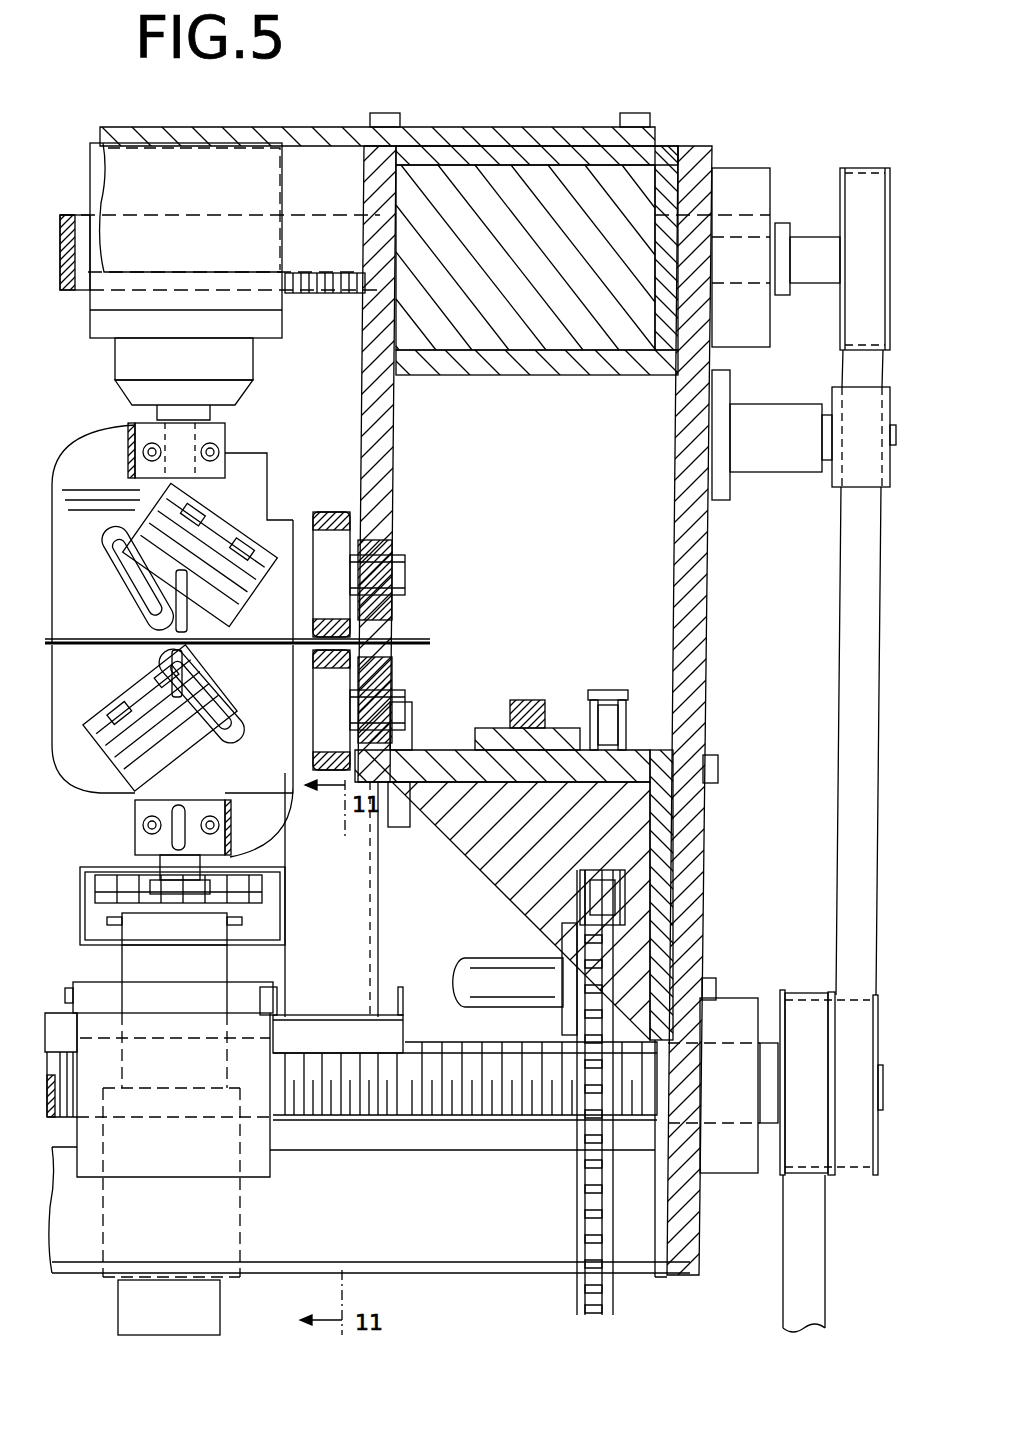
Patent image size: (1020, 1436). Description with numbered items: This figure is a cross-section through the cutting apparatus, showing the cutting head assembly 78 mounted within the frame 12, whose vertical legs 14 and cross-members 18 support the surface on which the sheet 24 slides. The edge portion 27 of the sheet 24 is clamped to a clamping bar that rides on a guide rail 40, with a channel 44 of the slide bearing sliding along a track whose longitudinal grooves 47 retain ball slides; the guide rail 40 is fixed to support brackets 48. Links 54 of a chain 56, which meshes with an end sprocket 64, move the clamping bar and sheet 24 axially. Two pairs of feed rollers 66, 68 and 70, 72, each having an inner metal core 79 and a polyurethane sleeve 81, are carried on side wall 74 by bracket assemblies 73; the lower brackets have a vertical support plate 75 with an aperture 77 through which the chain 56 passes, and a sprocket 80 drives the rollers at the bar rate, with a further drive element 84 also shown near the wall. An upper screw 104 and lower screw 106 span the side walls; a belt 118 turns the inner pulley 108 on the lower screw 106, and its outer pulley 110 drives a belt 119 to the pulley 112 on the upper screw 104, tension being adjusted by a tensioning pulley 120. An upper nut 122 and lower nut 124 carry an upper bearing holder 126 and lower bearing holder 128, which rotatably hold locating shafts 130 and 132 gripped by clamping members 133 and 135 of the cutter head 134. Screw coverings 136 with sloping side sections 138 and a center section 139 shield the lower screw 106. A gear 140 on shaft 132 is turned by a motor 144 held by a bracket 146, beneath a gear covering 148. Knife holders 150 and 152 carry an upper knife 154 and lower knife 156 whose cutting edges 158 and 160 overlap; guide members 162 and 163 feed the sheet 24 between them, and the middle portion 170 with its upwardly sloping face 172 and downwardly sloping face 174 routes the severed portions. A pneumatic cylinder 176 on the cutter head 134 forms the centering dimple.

The frame 12 is at (380, 918).
The vertical legs 14 is at (372, 958).
The cross-members 18 is at (355, 1212).
The sheet 24 is at (172, 751).
The edge portion 27 is at (420, 641).
The guide rail 40 is at (475, 722).
The channel 44 is at (528, 700).
The longitudinal grooves 47 is at (545, 715).
The support brackets 48 is at (412, 710).
The links 54 is at (606, 690).
The chain 56 is at (572, 1192).
The end sprocket 64 is at (626, 735).
The feed roller 66 is at (338, 510).
The feed roller 68 is at (295, 785).
The feed roller 70 is at (60, 485).
The feed roller 72 is at (75, 765).
The bracket assemblies 73 is at (520, 382).
The side wall 74 is at (705, 615).
The vertical support plate 75 is at (515, 900).
The aperture 77 is at (555, 925).
The cutting head assembly 78 is at (75, 452).
The inner metal core 79 is at (295, 710).
The sprocket 80 is at (665, 895).
The polyurethane sleeve 81 is at (370, 545).
The shaft 84 is at (490, 1010).
The upper screw 104 is at (325, 295).
The lower screw 106 is at (65, 1105).
The inner pulley 108 is at (780, 1185).
The outer pulley 110 is at (880, 1172).
The pulley 112 is at (892, 185).
The belt 118 is at (820, 1272).
The belt 119 is at (884, 690).
The tensioning pulley 120 is at (892, 410).
The upper nut 122 is at (82, 145).
The lower nut 124 is at (92, 1128).
The upper bearing holder 126 is at (100, 352).
The lower bearing holder 128 is at (95, 935).
The locating shaft 130 is at (235, 402).
The locating shaft 132 is at (135, 835).
The clamping member 133 is at (228, 440).
The cutter head 134 is at (112, 418).
The clamping member 135 is at (230, 848).
The screw coverings 136 is at (318, 1010).
The side sections 138 is at (350, 1050).
The center section 139 is at (400, 1010).
The gear 140 is at (170, 895).
The motor 144 is at (115, 1312).
The bracket 146 is at (159, 1049).
The gear covering 148 is at (85, 888).
The knife holder 150 is at (265, 465).
The knife holder 152 is at (135, 800).
The upper knife 154 is at (115, 548).
The lower knife 156 is at (250, 730).
The cutting edge 158 is at (205, 630).
The cutting edge 160 is at (293, 614).
The guide member 162 is at (220, 575).
The guide member 163 is at (275, 705).
The middle portion 170 is at (110, 625).
The upwardly sloping face 172 is at (276, 684).
The downwardly sloping face 174 is at (115, 682).
The pneumatic cylinder 176 is at (262, 515).